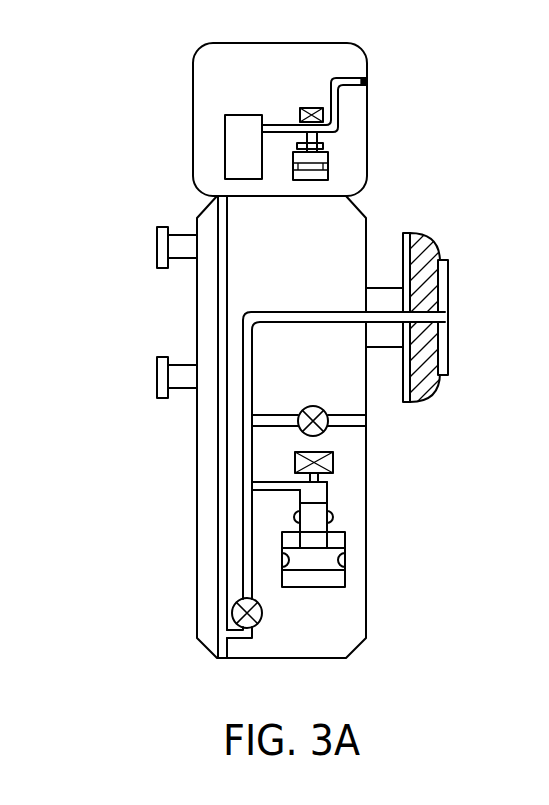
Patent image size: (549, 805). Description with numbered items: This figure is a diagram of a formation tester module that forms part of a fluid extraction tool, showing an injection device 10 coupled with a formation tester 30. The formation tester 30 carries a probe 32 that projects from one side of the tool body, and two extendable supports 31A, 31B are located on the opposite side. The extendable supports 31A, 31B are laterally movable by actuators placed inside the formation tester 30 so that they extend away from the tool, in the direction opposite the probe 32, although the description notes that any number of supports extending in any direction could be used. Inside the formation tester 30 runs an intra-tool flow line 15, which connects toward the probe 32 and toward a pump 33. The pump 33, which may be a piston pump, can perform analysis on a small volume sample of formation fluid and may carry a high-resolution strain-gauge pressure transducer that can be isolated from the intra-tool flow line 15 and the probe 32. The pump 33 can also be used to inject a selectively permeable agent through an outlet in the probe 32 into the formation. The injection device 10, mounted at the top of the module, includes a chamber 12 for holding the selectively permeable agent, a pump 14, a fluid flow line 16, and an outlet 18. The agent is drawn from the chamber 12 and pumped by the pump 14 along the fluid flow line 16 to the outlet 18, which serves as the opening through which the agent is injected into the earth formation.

The injection device 10 is at (367, 123).
The chamber 12 is at (225, 142).
The pump 14 is at (328, 176).
The intra-tool flow line 15 is at (218, 485).
The fluid flow line 16 is at (341, 76).
The outlet 18 is at (366, 80).
The formation tester 30 is at (196, 533).
The extendable support 31A is at (157, 245).
The extendable support 31B is at (157, 385).
The probe 32 is at (375, 350).
The pump 33 is at (347, 542).